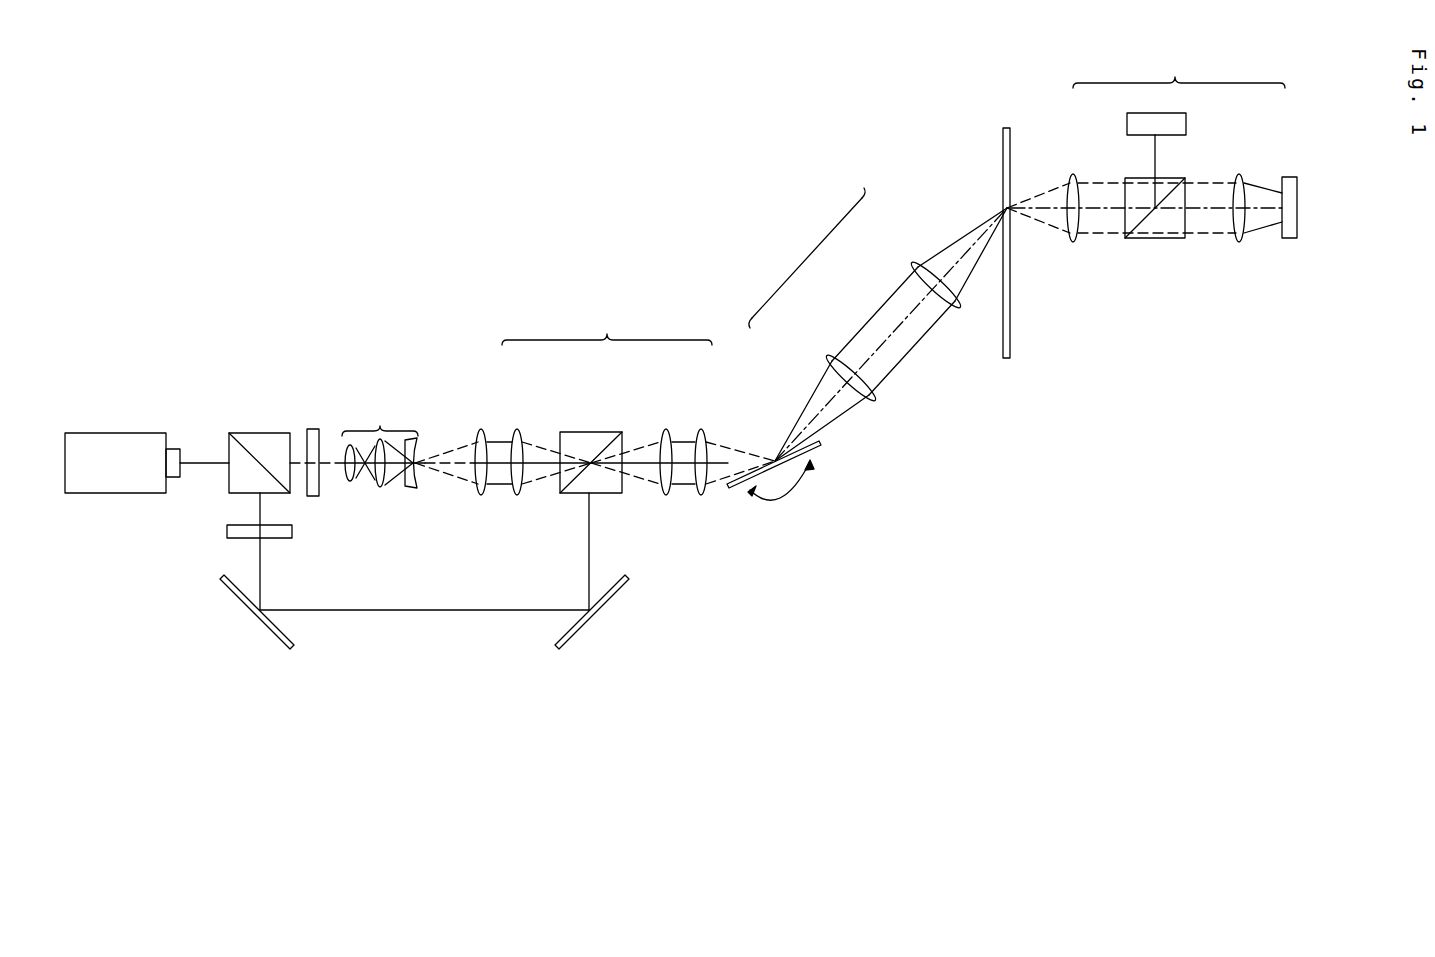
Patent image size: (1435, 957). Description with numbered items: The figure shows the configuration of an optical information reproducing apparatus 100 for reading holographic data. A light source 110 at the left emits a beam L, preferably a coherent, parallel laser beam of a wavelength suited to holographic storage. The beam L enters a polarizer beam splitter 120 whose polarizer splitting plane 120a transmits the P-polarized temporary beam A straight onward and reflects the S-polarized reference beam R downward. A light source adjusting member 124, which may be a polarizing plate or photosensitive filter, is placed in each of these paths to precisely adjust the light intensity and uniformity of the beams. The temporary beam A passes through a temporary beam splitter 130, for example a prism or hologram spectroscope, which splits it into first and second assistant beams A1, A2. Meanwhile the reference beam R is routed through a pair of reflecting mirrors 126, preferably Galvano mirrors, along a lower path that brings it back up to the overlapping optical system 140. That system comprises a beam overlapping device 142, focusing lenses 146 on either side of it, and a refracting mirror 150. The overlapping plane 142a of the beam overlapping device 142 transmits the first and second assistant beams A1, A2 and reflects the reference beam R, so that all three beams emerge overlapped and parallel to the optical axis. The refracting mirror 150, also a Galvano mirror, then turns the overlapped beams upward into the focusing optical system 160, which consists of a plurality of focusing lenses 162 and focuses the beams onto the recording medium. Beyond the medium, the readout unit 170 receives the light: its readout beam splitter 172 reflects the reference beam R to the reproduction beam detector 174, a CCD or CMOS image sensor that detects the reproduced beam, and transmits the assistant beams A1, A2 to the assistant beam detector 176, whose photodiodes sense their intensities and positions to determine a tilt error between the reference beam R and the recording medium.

The optical information reproducing apparatus 100 is at (333, 254).
The light source 110 is at (115, 433).
The polarizer beam splitter 120 is at (243, 432).
The polarizer splitting plane 120a is at (258, 460).
The light source adjusting member 124 is at (227, 530).
The reflecting mirrors 126 is at (275, 637).
The temporary beam splitter 130 is at (383, 441).
The overlapping optical system 140 is at (625, 398).
The beam overlapping device 142 is at (570, 432).
The overlapping plane 142a is at (598, 457).
The focusing lens 146 is at (482, 428).
The refracting mirror 150 is at (820, 443).
The focusing optical system 160 is at (879, 294).
The focusing lenses 162 is at (913, 263).
The readout unit 170 is at (1158, 175).
The readout beam splitter 172 is at (1163, 240).
The reproduction beam detector 174 is at (1188, 122).
The assistant beam detector 176 is at (1290, 240).
The beam L is at (198, 463).
The reference beam R is at (262, 578).
The temporary beam A is at (332, 463).
The first assistant beam A1 is at (455, 443).
The second assistant beam A2 is at (455, 480).